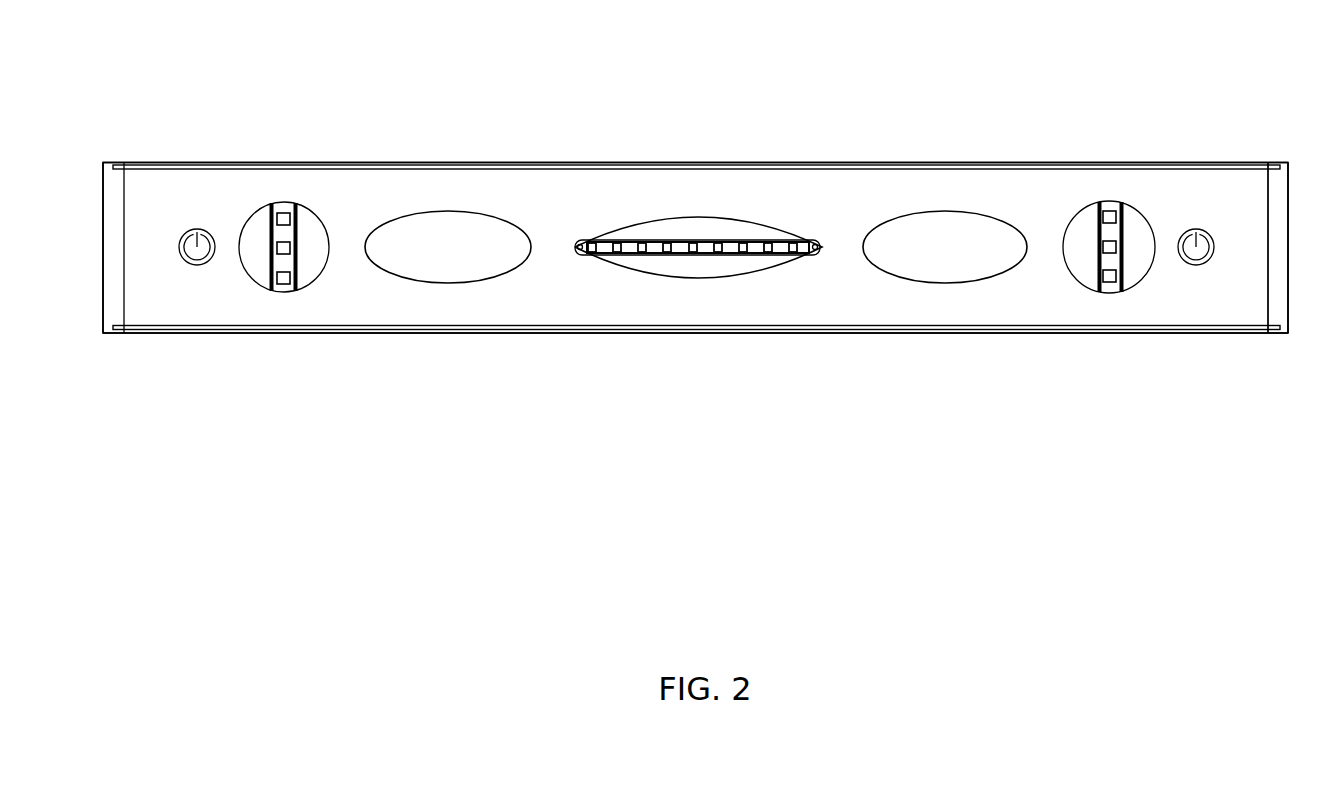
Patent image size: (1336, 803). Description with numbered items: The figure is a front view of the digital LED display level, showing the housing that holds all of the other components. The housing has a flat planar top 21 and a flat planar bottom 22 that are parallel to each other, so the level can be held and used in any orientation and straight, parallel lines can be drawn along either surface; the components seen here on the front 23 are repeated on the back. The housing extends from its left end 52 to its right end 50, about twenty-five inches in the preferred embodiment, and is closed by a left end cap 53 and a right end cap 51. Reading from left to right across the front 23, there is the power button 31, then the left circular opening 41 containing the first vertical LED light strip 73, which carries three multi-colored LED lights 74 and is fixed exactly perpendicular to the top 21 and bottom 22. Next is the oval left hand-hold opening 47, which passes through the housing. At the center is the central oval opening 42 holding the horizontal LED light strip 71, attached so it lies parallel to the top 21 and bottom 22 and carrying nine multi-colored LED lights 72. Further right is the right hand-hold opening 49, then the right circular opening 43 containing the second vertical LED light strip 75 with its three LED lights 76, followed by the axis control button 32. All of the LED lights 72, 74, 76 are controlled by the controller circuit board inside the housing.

The top 21 is at (230, 165).
The bottom 22 is at (458, 333).
The front 23 is at (560, 205).
The power button 31 is at (182, 250).
The axis control button 32 is at (1196, 257).
The left circular opening 41 is at (238, 274).
The central oval opening 42 is at (695, 255).
The right circular opening 43 is at (1118, 237).
The left hand-hold opening 47 is at (448, 228).
The right hand-hold opening 49 is at (950, 228).
The right end 50 is at (1248, 187).
The right end cap 51 is at (1282, 190).
The left end 52 is at (133, 165).
The left end cap 53 is at (110, 225).
The horizontal LED light strip 71 is at (603, 250).
The multi-colored LED lights 72 is at (667, 250).
The first vertical LED light strip 73 is at (278, 267).
The multi-colored LED lights 74 is at (282, 283).
The second vertical LED light strip 75 is at (1137, 212).
The LED lights 76 is at (1108, 278).